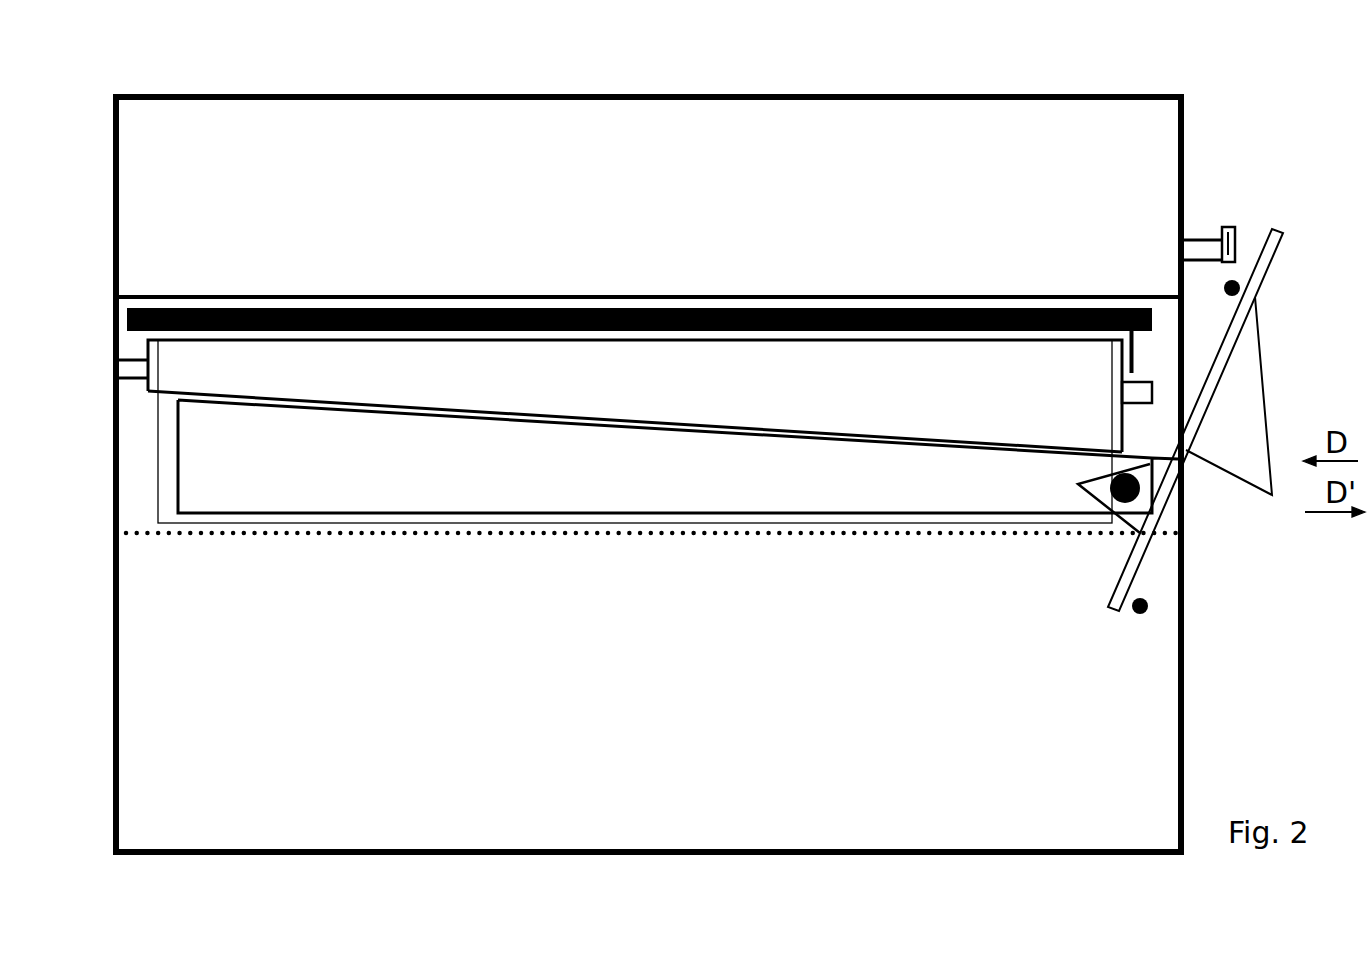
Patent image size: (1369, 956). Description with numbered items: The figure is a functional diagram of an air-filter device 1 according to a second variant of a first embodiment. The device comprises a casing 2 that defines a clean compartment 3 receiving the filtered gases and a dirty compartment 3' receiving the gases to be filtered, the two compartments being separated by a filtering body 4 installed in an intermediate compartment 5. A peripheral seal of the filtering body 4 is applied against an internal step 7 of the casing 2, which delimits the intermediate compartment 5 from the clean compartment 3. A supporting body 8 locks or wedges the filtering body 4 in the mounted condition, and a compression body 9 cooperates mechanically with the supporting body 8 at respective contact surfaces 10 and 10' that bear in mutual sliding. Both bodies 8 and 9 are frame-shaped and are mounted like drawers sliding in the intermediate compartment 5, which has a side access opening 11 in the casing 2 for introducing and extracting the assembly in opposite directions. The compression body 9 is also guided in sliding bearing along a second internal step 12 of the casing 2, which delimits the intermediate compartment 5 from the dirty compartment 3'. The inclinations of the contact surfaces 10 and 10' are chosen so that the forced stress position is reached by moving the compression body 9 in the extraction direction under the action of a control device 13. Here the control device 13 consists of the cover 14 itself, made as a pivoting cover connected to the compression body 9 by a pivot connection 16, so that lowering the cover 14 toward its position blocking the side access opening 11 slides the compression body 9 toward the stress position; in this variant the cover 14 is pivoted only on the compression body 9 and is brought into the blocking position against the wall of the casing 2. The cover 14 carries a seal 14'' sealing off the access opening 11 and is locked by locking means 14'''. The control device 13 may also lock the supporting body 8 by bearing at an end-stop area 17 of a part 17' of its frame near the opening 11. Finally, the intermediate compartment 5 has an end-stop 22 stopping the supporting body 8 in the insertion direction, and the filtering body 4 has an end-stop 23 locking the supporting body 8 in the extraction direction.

The air-filter device 1 is at (1214, 673).
The casing 2 is at (113, 718).
The clean compartment 3 is at (648, 67).
The dirty compartment 3' is at (1218, 474).
The filtering body 4 is at (822, 310).
The intermediate compartment 5 is at (138, 458).
The internal step 7 is at (548, 297).
The supporting body 8 is at (313, 357).
The compression body 9 is at (788, 520).
The contact surface 10 is at (635, 511).
The contact surface 10' is at (678, 525).
The side access opening 11 is at (1171, 372).
The second internal step 12 is at (368, 532).
The control device 13 is at (1245, 403).
The cover 14 is at (1195, 420).
The seal 14'' is at (1250, 435).
The locking means 14''' is at (1238, 217).
The pivot connection 16 is at (1110, 508).
The end-stop area 17 is at (1151, 420).
The part of the frame 17' is at (1206, 501).
The end-stop 22 is at (130, 368).
The end-stop 23 is at (1133, 365).